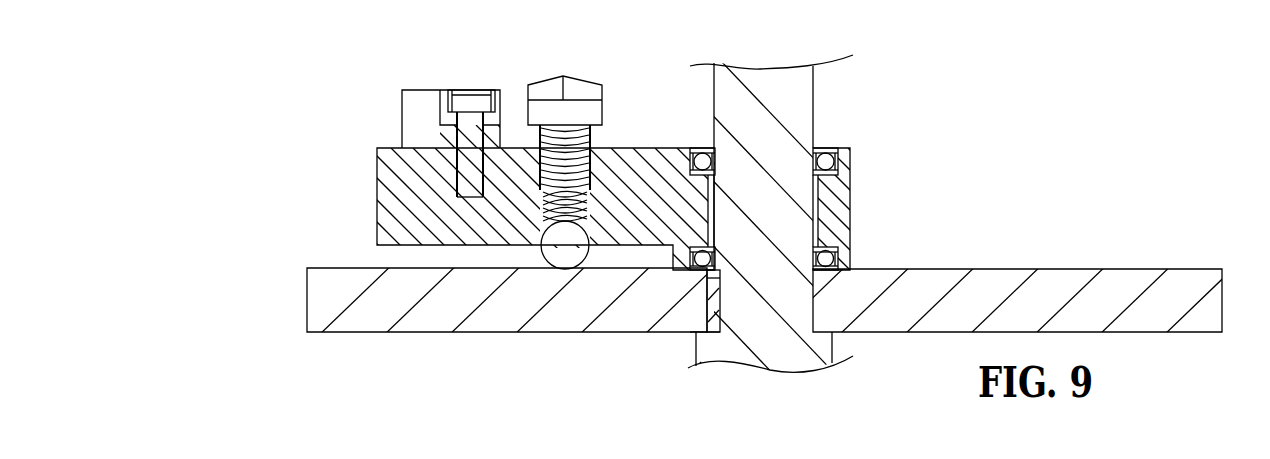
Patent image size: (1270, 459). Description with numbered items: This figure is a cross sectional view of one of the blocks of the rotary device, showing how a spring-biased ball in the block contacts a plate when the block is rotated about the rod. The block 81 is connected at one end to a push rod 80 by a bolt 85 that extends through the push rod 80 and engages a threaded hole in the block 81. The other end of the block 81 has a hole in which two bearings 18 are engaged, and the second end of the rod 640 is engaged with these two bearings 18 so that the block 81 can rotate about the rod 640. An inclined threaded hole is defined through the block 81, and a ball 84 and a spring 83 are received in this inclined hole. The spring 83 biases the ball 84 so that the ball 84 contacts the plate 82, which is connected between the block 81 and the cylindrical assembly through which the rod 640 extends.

The bearing 18 is at (693, 148).
The push rod 80 is at (418, 105).
The block 81 is at (388, 178).
The plate 82 is at (365, 320).
The spring 83 is at (540, 205).
The ball 84 is at (556, 252).
The bolt 85 is at (468, 100).
The rod 640 is at (800, 97).